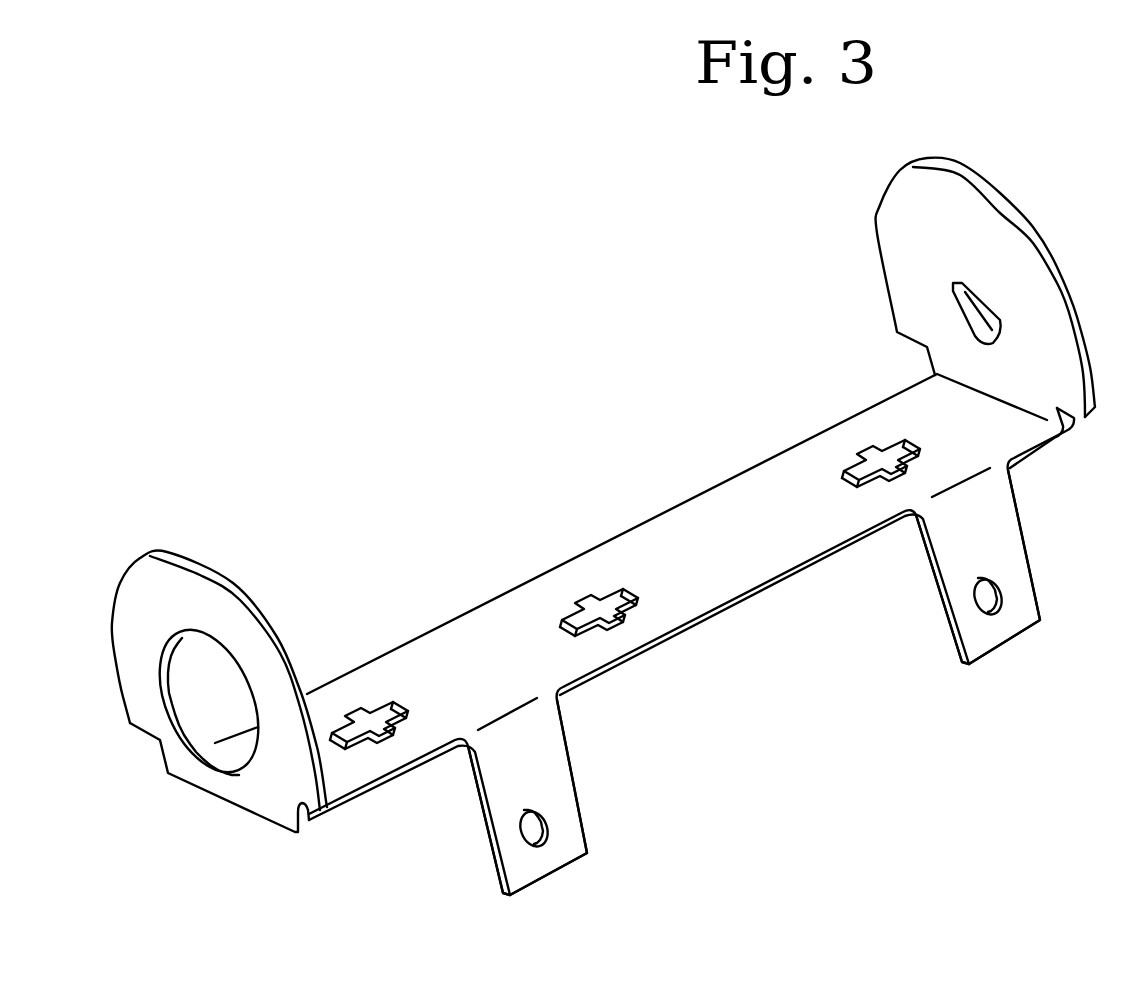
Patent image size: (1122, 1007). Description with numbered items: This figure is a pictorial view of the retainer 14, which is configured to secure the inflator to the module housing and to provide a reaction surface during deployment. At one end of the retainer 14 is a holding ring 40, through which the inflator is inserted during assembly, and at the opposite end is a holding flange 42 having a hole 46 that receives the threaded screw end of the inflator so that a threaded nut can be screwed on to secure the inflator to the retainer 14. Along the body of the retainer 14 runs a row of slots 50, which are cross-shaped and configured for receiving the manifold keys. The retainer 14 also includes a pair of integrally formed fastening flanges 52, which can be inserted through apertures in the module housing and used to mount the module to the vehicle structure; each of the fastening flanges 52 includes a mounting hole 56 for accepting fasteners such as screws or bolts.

The retainer 14 is at (470, 608).
The holding ring 40 is at (163, 578).
The holding flange 42 is at (937, 192).
The hole 46 is at (983, 313).
The slots 50 is at (378, 730).
The fastening flanges 52 is at (508, 790).
The mounting holes 56 is at (532, 830).